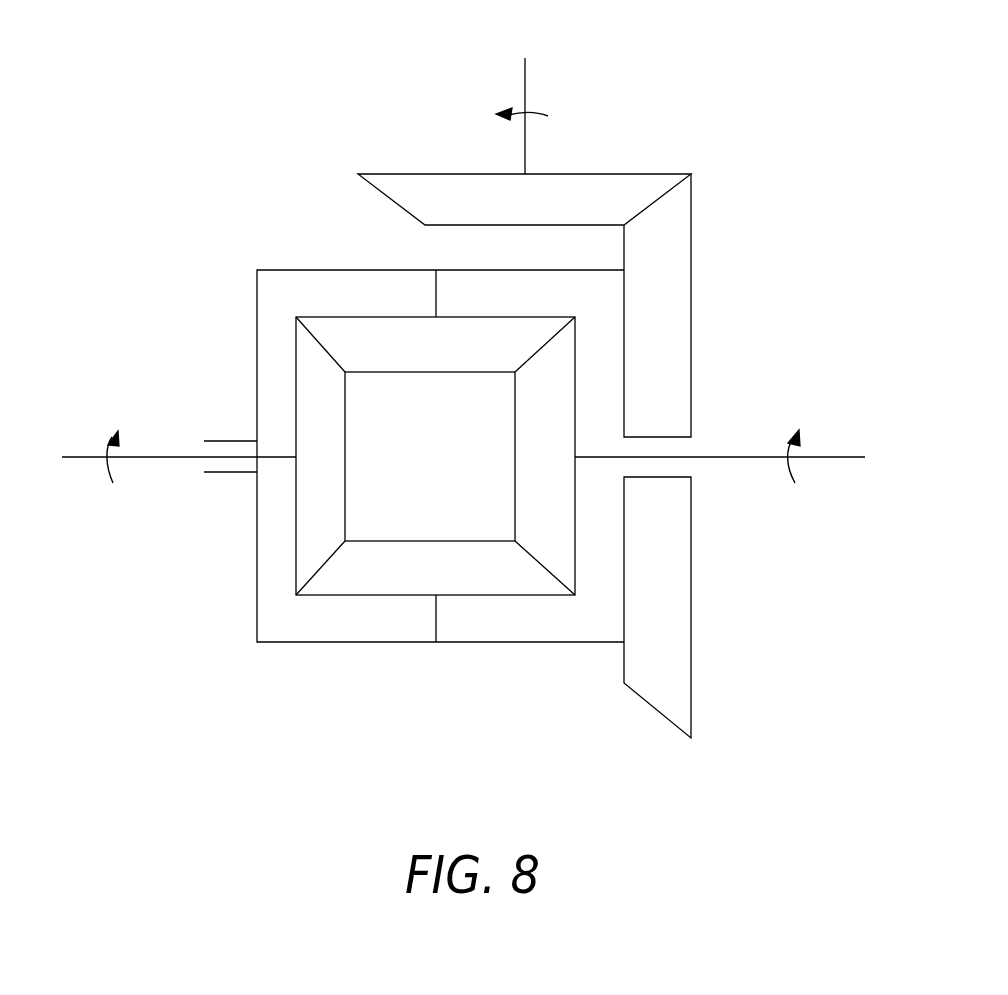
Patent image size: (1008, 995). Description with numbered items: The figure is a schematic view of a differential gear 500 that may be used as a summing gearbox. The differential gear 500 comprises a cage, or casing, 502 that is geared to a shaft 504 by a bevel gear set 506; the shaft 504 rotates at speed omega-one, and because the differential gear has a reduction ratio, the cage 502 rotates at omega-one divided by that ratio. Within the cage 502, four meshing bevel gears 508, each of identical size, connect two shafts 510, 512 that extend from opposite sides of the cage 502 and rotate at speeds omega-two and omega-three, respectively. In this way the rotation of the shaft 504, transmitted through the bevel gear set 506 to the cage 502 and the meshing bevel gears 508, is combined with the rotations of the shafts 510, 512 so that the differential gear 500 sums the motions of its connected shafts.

The differential gear 500 is at (316, 94).
The cage 502 is at (677, 142).
The shaft 504 is at (523, 86).
The bevel gear set 506 is at (339, 203).
The meshing bevel gears 508 is at (423, 353).
The shaft 510 is at (162, 458).
The shaft 512 is at (742, 458).